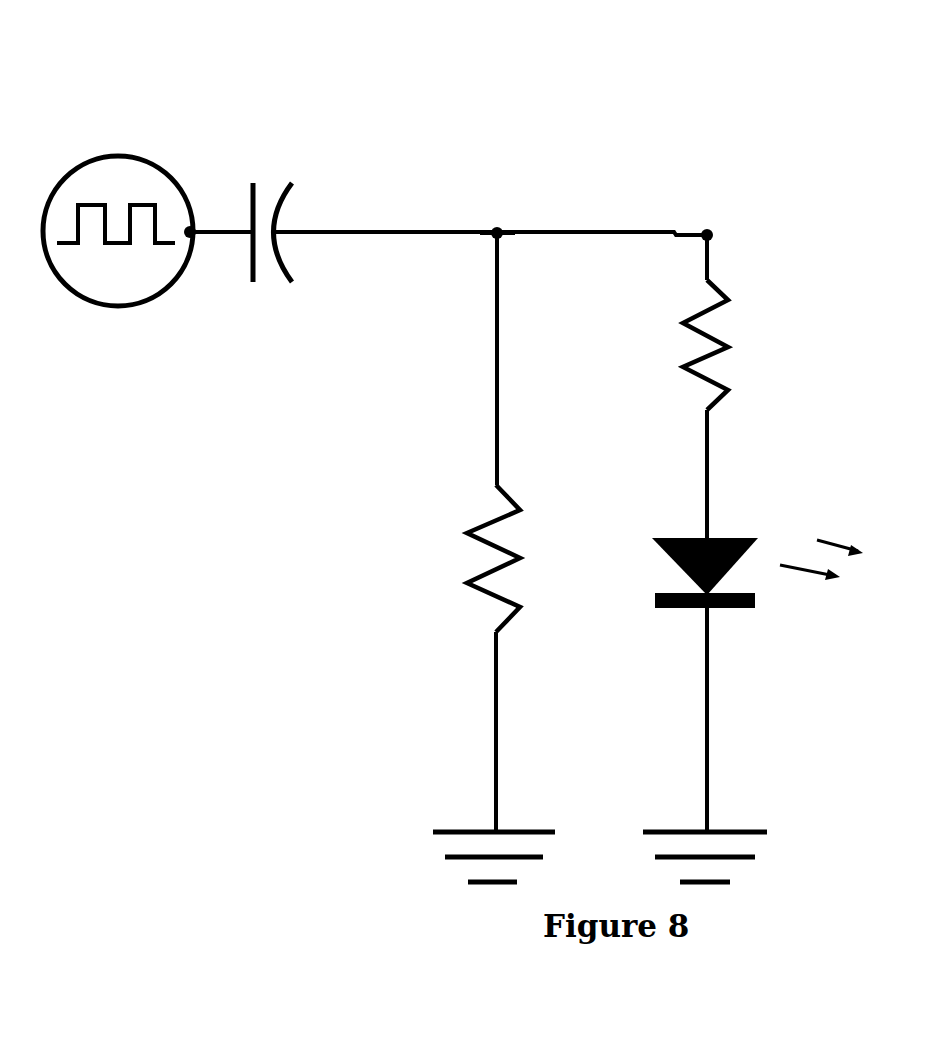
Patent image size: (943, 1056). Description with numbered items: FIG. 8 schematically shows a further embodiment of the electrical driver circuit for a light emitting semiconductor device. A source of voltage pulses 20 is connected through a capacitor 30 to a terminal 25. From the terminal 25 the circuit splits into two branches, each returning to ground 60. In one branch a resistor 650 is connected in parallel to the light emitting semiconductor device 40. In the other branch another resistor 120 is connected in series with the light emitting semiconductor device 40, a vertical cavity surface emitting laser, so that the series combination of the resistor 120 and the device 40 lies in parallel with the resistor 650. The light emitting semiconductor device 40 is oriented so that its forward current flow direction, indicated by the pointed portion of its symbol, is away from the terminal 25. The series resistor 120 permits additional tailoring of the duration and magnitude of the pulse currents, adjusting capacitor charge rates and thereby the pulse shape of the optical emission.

The source of voltage pulses 20 is at (122, 137).
The capacitor 30 is at (300, 157).
The terminal 25 is at (495, 197).
The resistor 650 is at (455, 513).
The other resistor 120 is at (737, 312).
The light emitting semiconductor device 40 is at (748, 513).
The ground 60 is at (433, 882).